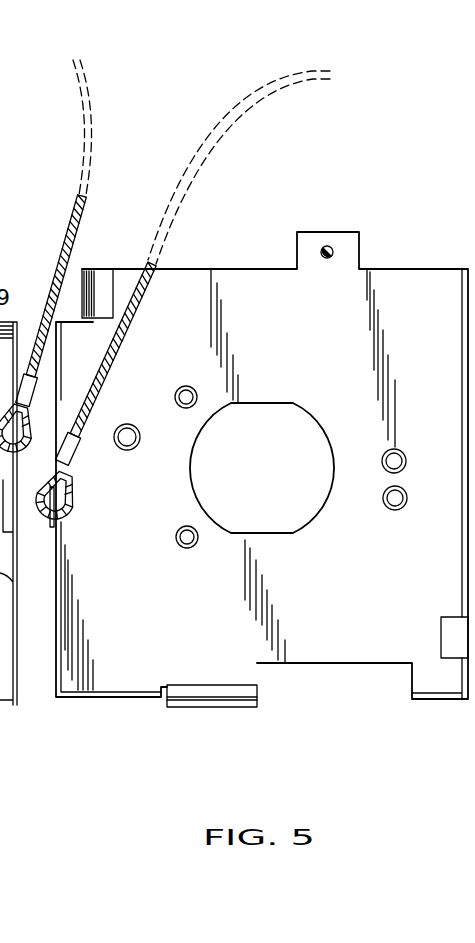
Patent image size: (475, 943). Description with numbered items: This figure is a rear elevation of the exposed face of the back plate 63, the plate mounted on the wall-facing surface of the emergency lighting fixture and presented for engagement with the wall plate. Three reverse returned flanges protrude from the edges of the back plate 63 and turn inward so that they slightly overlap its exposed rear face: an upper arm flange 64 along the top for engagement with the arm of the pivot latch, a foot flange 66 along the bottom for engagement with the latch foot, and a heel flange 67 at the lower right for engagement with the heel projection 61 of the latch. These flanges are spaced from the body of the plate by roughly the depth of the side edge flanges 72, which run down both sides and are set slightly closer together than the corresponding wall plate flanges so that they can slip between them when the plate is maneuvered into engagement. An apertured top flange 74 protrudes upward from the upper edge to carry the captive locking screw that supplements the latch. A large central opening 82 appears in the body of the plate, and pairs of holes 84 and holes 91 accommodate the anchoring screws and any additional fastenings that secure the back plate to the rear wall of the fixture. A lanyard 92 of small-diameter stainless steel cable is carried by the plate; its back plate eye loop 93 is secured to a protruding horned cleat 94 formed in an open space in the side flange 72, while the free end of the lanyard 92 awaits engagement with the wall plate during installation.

The heel projection 61 is at (278, 485).
The back plate 63 is at (100, 696).
The upper arm flange 64 is at (98, 288).
The foot flange 66 is at (212, 690).
The heel flange 67 is at (445, 628).
The side edge flanges 72 is at (462, 350).
The apertured top flange 74 is at (308, 240).
The central opening 82 is at (299, 428).
The holes 84 is at (194, 389).
The holes 91 is at (127, 424).
The lanyard 92 is at (70, 197).
The back plate eye loop 93 is at (75, 495).
The horned cleat 94 is at (60, 523).